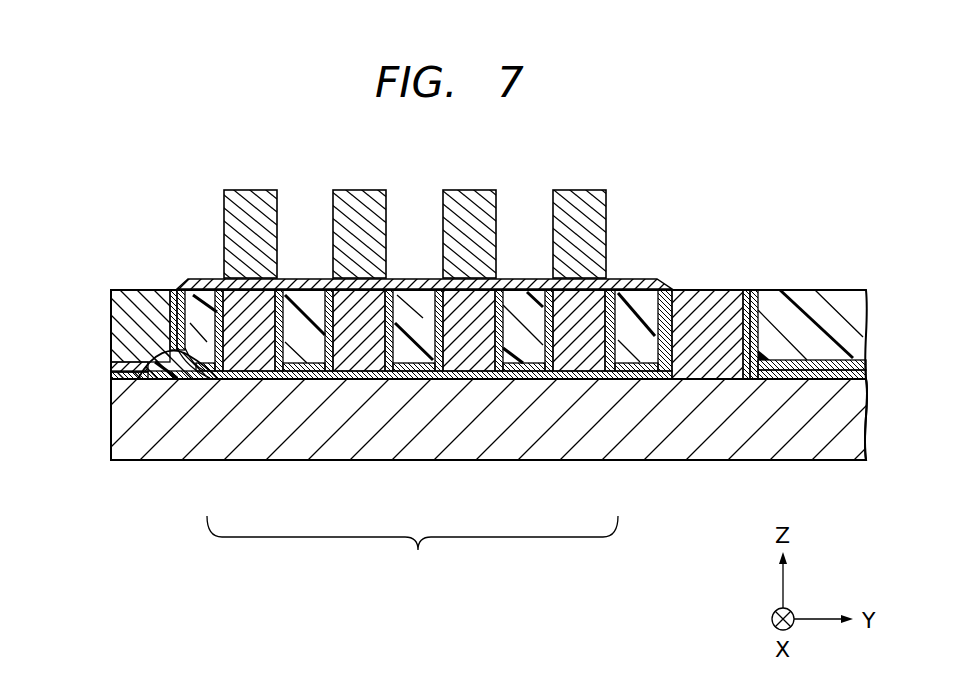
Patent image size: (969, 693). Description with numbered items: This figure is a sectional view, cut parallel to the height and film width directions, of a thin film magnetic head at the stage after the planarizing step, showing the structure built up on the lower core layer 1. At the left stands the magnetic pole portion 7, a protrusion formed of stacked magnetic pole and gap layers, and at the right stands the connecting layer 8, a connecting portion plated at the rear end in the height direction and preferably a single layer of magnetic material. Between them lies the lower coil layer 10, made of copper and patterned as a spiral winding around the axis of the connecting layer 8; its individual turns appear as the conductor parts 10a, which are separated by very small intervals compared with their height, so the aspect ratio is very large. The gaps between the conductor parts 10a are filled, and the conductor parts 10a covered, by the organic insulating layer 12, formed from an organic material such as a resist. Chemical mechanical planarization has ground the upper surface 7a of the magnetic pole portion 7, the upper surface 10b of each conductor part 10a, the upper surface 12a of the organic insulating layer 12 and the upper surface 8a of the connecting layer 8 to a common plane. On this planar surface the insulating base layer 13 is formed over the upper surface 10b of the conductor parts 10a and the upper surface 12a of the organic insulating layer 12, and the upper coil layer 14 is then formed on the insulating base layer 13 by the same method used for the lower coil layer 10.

The lower core layer 1 is at (686, 440).
The magnetic pole portion 7 is at (97, 346).
The upper surface of the magnetic pole portion 7a is at (150, 292).
The connecting layer 8 is at (718, 347).
The upper surface of the connecting layer 8a is at (712, 292).
The lower coil layer 10 is at (412, 439).
The conductor part 10a is at (243, 353).
The upper surface of the conductor part 10b is at (252, 286).
The organic insulating layer 12 is at (633, 292).
The upper surface of the organic insulating layer 12a is at (524, 283).
The insulating base layer 13 is at (416, 283).
The upper coil layer 14 is at (352, 205).